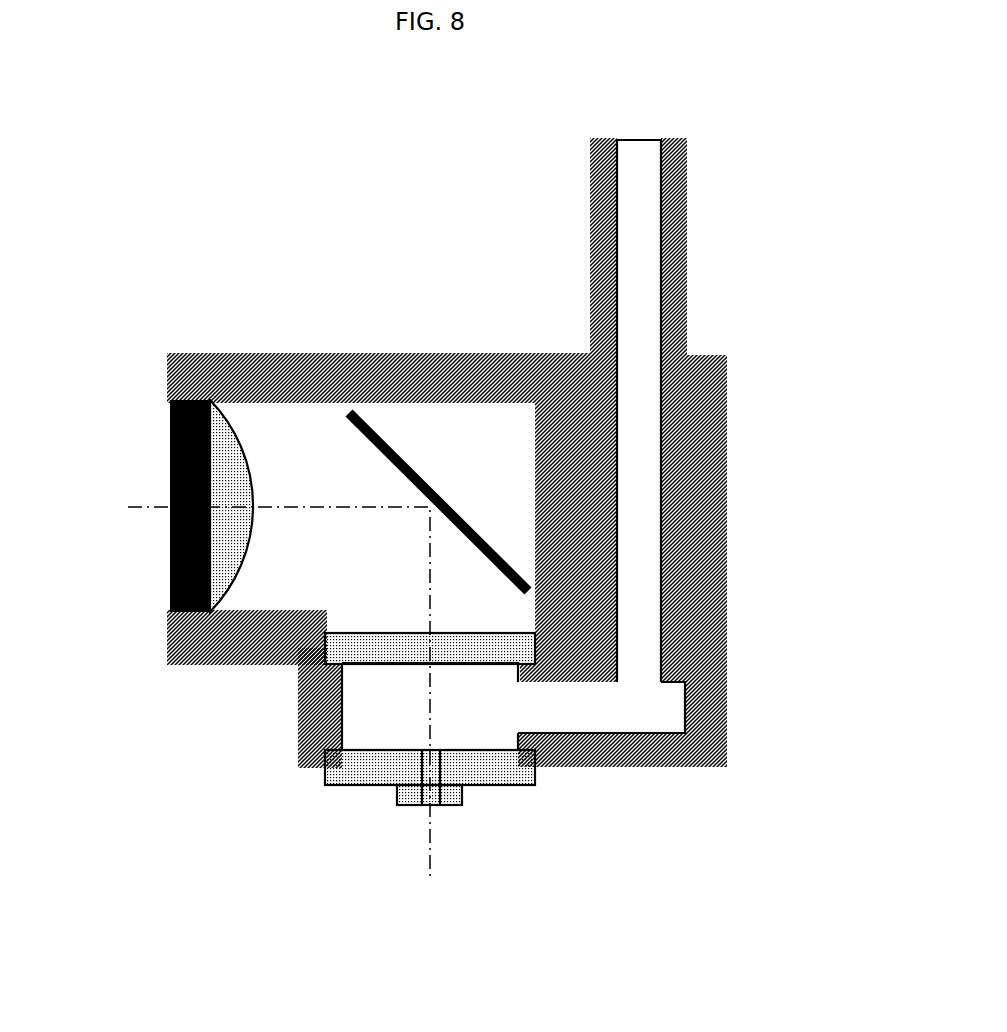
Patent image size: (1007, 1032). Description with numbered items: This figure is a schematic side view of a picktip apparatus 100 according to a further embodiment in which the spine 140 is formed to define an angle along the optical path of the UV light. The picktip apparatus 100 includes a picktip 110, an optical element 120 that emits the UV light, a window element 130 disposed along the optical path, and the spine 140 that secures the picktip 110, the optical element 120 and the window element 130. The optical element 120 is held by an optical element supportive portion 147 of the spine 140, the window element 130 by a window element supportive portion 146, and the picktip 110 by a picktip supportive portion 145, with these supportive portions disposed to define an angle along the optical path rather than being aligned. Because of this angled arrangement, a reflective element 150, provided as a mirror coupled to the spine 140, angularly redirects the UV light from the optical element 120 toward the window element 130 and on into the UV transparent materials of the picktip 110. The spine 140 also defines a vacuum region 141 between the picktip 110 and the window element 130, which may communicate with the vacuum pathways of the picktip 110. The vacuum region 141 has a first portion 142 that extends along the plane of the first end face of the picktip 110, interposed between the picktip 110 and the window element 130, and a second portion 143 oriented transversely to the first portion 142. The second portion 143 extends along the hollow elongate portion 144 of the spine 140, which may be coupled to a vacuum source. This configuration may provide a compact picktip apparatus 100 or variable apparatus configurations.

The picktip apparatus 100 is at (711, 226).
The picktip 110 is at (325, 785).
The optical element 120 is at (172, 438).
The window element 130 is at (340, 647).
The spine 140 is at (590, 358).
The vacuum region 141 is at (601, 707).
The first portion 142 is at (430, 706).
The second portion 143 is at (650, 360).
The elongate portion 144 is at (674, 300).
The picktip supportive portion 145 is at (305, 762).
The window element supportive portion 146 is at (310, 655).
The optical element supportive portion 147 is at (190, 370).
The reflective element 150 is at (421, 473).